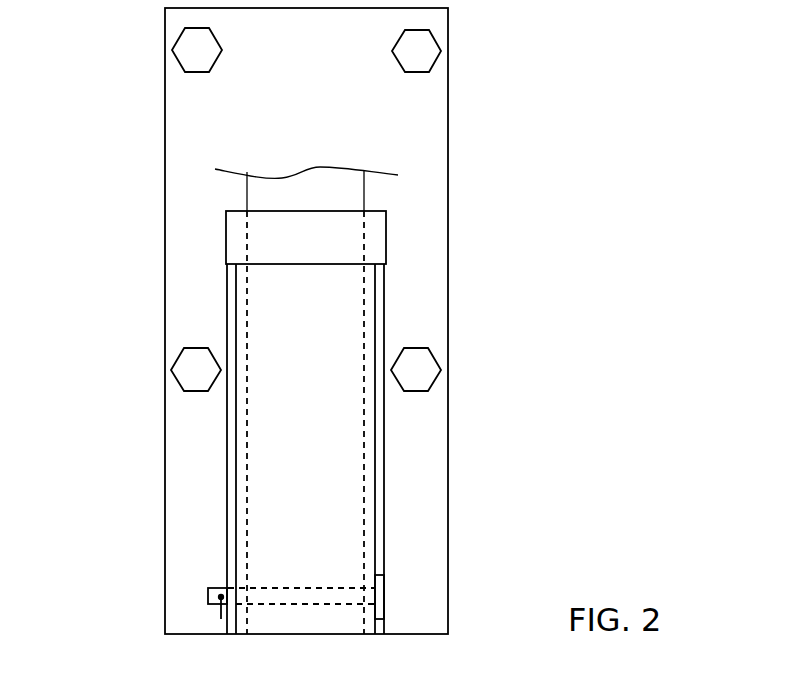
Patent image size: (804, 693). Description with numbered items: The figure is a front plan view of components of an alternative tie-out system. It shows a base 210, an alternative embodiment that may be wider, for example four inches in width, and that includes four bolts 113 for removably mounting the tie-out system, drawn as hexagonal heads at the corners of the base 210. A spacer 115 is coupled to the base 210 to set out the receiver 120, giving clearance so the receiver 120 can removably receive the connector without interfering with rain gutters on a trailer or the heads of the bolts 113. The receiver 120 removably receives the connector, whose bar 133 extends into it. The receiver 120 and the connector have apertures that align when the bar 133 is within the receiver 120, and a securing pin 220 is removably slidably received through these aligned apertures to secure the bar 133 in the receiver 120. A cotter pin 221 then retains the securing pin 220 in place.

The base 210 is at (449, 145).
The bolts 113 is at (205, 48).
The receiver 120 is at (386, 236).
The bar 133 is at (258, 200).
The spacer 115 is at (230, 465).
The securing pin 220 is at (378, 598).
The cotter pin 221 is at (220, 618).